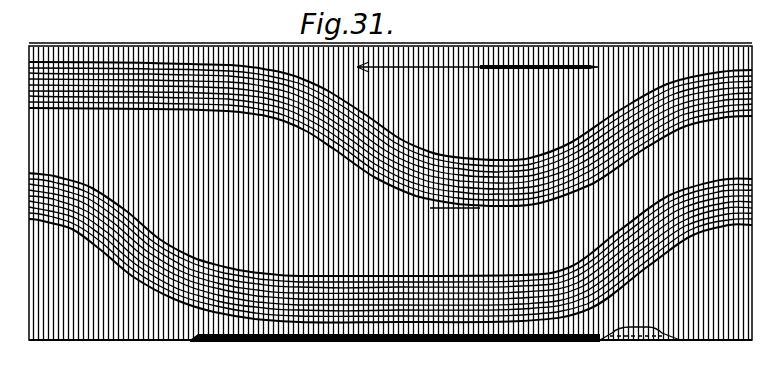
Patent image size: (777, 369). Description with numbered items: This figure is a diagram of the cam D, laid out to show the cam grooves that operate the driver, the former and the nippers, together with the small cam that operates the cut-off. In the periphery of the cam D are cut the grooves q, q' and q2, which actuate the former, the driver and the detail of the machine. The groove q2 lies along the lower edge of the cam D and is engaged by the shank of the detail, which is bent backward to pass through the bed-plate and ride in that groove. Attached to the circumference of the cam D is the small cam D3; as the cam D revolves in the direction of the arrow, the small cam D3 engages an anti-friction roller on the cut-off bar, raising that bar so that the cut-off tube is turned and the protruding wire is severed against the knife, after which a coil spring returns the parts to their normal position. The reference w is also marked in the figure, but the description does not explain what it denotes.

The cam D is at (390, 192).
The cam groove q is at (391, 193).
The cam groove q' is at (455, 229).
The cam groove q2 is at (395, 351).
The web / base w is at (390, 354).
The small cam D3 is at (660, 330).